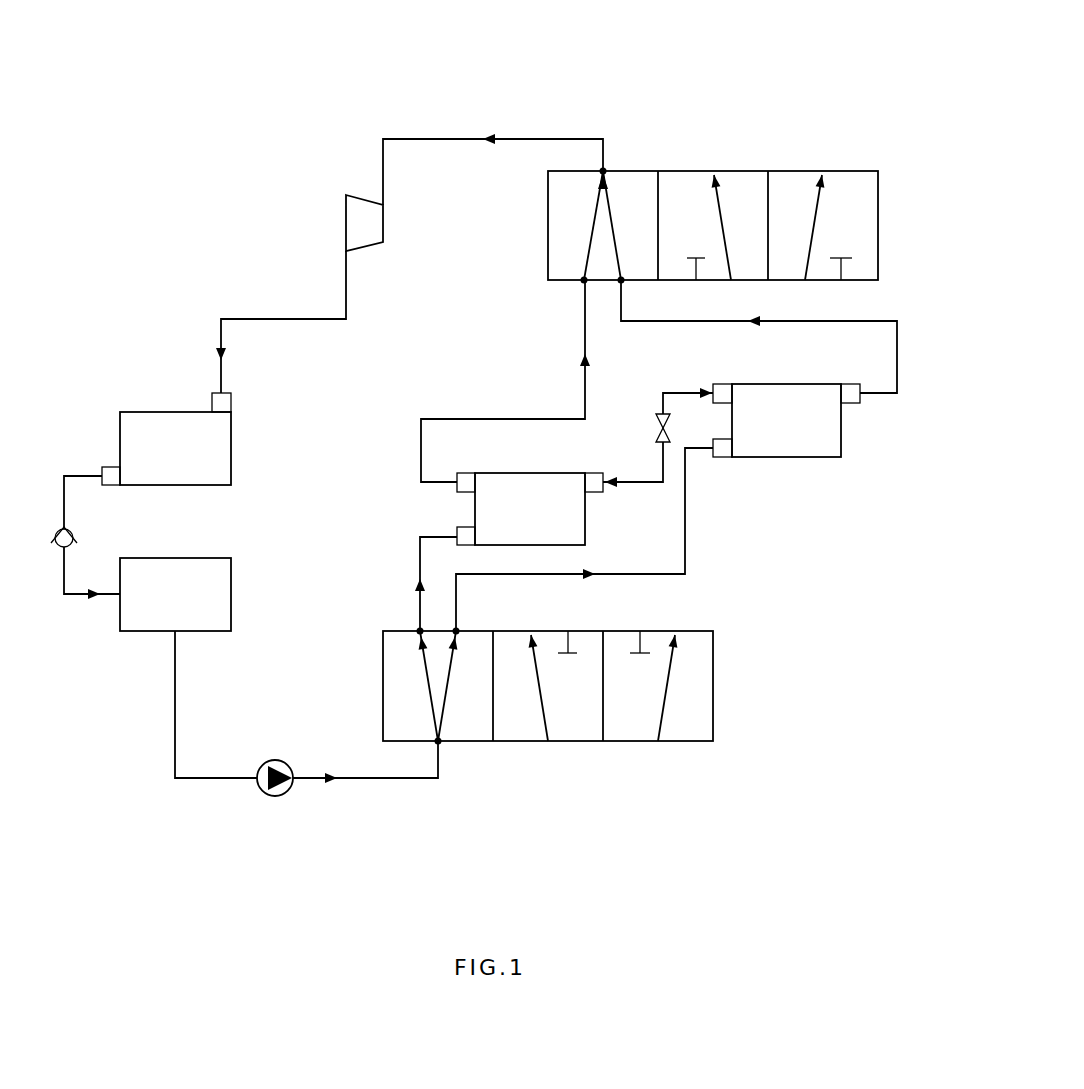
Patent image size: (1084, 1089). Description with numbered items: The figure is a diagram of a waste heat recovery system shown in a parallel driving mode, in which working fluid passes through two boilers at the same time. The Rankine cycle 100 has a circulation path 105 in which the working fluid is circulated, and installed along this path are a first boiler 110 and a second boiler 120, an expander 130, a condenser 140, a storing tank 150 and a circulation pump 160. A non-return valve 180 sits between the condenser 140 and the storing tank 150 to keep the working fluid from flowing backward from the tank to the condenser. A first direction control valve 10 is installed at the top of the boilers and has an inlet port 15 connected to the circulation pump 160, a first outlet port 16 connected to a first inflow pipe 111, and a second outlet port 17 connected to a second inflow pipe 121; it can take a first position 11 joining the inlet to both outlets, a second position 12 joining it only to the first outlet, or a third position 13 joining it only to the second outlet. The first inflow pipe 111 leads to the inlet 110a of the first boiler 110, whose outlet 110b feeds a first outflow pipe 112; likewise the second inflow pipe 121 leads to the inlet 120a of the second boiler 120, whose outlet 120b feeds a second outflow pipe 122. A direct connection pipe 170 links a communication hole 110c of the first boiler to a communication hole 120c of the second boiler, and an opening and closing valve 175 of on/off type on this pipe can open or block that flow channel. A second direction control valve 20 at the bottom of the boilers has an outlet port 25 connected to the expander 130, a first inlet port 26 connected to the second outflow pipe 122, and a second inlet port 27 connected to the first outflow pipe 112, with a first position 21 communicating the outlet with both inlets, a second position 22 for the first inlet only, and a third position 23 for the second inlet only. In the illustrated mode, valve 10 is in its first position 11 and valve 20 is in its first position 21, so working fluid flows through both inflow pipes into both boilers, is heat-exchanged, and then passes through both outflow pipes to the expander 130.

The Rankine cycle 100 is at (711, 53).
The circulation path 105 is at (432, 136).
The first direction control valve 10 is at (728, 680).
The first position 11 is at (468, 744).
The second position 12 is at (572, 744).
The third position 13 is at (688, 744).
The inlet port 15 is at (436, 745).
The first outlet port 16 is at (418, 628).
The second outlet port 17 is at (458, 628).
The second direction control valve 20 is at (892, 228).
The first position 21 is at (629, 180).
The second position 22 is at (740, 180).
The third position 23 is at (858, 180).
The outlet port 25 is at (600, 170).
The first inlet port 26 is at (622, 283).
The second inlet port 27 is at (583, 283).
The first boiler 110 is at (530, 471).
The inlet 110a is at (456, 528).
The outlet 110b is at (456, 476).
The communication hole 110c is at (591, 494).
The first inflow pipe 111 is at (419, 554).
The first outflow pipe 112 is at (500, 417).
The second boiler 120 is at (810, 460).
The inlet 120a is at (721, 459).
The outlet 120b is at (850, 406).
The communication hole 120c is at (721, 383).
The second inflow pipe 121 is at (687, 549).
The second outflow pipe 122 is at (870, 322).
The expander 130 is at (385, 220).
The condenser 140 is at (233, 445).
The storing tank 150 is at (233, 592).
The circulation pump 160 is at (274, 760).
The direct connection pipe 170 is at (660, 462).
The opening and closing valve 175 is at (648, 418).
The non-return valve 180 is at (74, 533).